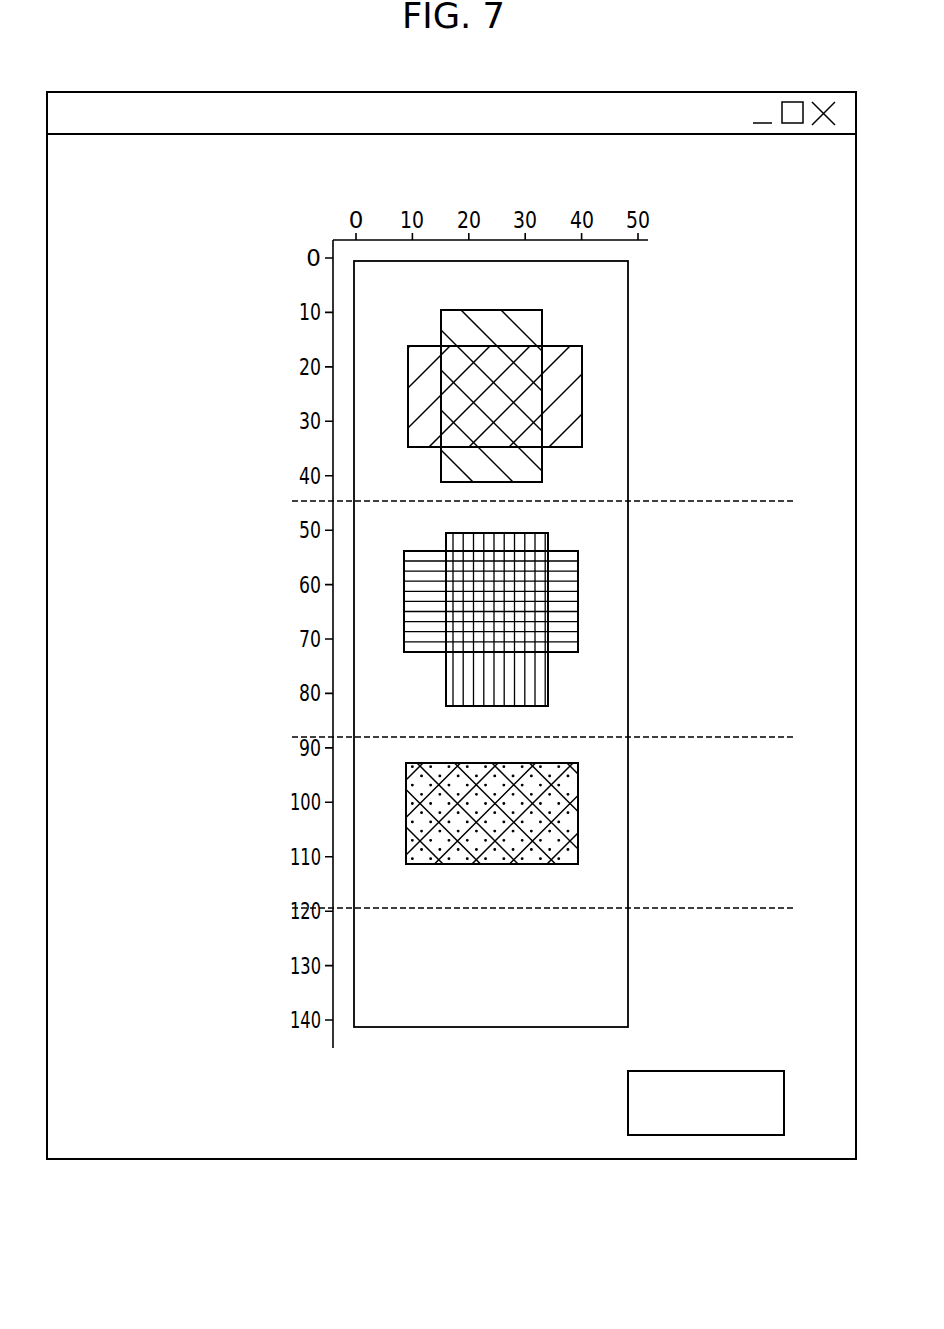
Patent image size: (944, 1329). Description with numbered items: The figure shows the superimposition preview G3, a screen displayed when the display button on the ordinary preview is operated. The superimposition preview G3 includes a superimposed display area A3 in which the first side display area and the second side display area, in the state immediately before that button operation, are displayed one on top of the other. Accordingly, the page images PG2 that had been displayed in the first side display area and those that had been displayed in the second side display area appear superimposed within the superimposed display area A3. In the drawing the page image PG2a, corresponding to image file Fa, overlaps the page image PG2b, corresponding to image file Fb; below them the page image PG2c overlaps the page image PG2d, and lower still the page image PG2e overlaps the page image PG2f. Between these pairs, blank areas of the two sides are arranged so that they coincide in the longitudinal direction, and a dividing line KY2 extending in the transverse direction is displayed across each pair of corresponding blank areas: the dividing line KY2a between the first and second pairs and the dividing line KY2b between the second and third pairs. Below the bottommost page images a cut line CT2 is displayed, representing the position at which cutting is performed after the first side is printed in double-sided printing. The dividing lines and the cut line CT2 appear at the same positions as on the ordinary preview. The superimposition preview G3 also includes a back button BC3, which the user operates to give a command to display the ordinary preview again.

The superimposition preview G3 is at (578, 77).
The superimposed display area A3 is at (628, 298).
The page images PG2 is at (498, 584).
The page image PG2a is at (582, 363).
The page image PG2b is at (520, 297).
The page image PG2c is at (548, 540).
The page image PG2d is at (578, 604).
The page image PG2e is at (578, 776).
The page image PG2f is at (578, 846).
The dividing line KY2 is at (543, 599).
The dividing line KY2a is at (663, 500).
The dividing line KY2b is at (663, 737).
The cut line CT2 is at (498, 910).
The back button BC3 is at (708, 1070).